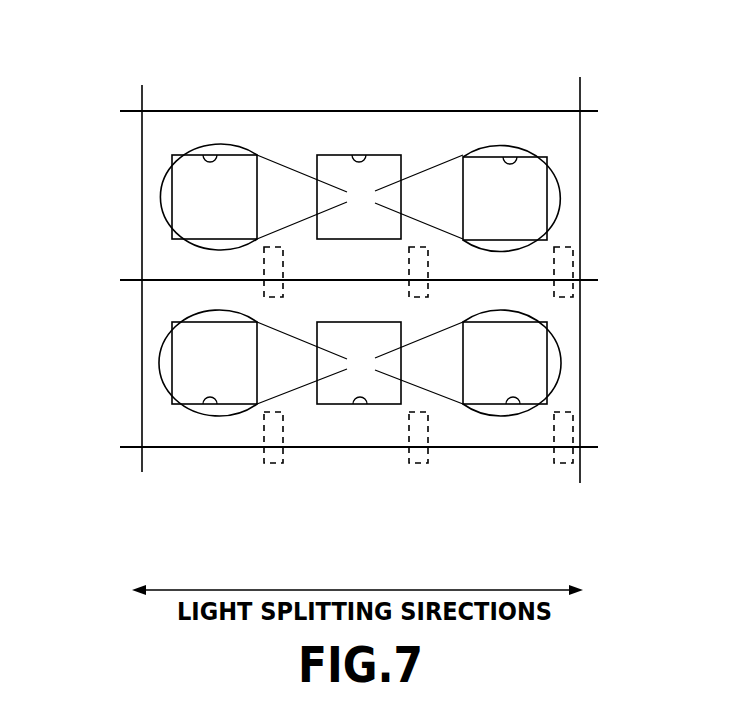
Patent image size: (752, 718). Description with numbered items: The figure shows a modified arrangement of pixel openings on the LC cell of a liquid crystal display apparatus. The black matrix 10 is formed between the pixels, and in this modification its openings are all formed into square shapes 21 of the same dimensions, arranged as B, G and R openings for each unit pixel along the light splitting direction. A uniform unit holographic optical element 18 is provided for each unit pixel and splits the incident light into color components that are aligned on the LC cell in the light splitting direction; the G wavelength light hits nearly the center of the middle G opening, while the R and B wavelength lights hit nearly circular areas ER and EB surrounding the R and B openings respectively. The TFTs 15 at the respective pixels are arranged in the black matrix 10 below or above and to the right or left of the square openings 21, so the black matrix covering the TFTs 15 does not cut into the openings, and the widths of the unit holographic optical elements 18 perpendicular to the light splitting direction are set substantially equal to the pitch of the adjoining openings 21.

The black matrix 10 is at (289, 125).
The TFT 15 is at (265, 262).
The unit holographic optical element 18 is at (440, 106).
The square-shaped opening 21 is at (212, 154).
The area hit by B wavelength light EB is at (158, 194).
The area hit by R wavelength light ER is at (562, 193).